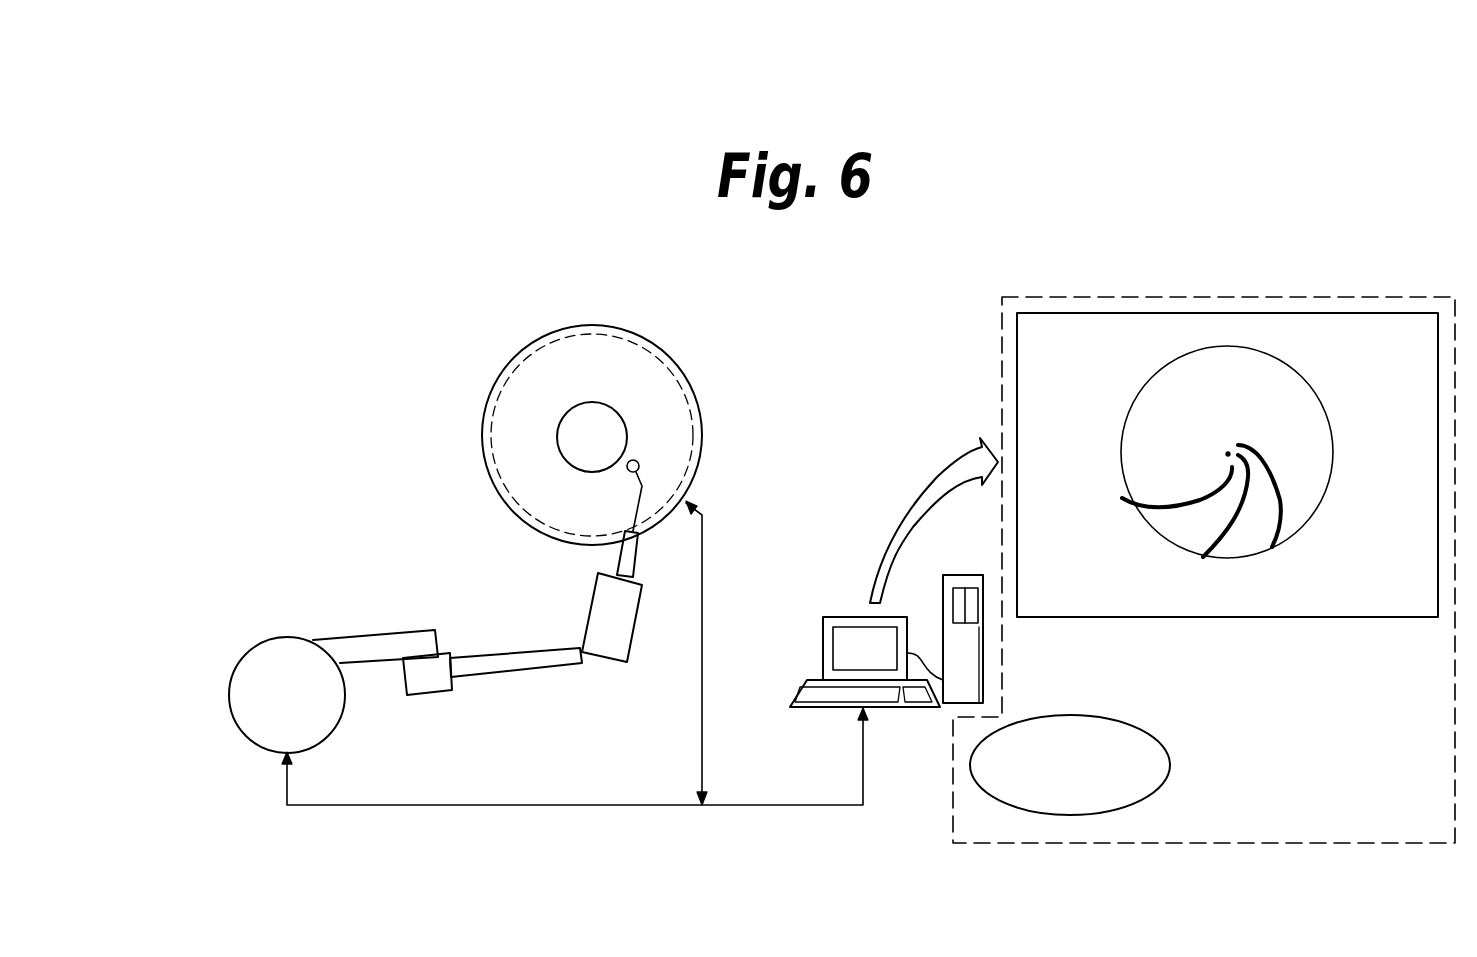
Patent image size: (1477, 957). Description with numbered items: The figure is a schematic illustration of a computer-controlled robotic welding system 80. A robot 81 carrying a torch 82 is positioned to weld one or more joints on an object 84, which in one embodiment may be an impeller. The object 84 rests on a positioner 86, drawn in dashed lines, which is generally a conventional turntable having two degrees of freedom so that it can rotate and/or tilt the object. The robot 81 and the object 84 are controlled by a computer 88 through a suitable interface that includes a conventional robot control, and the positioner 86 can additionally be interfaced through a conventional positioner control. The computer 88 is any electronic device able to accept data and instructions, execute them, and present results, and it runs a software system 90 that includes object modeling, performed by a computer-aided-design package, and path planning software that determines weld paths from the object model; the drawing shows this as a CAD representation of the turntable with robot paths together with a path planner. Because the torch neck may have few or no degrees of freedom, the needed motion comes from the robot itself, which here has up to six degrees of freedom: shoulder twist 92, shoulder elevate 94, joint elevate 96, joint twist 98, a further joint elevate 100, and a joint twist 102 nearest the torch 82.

The computer-controlled robotic welding system 80 is at (326, 302).
The robot 81 is at (365, 620).
The torch 82 is at (647, 483).
The object 84 is at (675, 365).
The positioner 86 is at (648, 352).
The computer 88 is at (842, 617).
The software system 90 is at (1148, 288).
The shoulder twist 92 is at (228, 672).
The shoulder elevate 94 is at (263, 638).
The joint elevate 96 is at (400, 662).
The joint twist 98 is at (458, 652).
The joint elevate 100 is at (608, 662).
The joint twist 102 is at (633, 575).